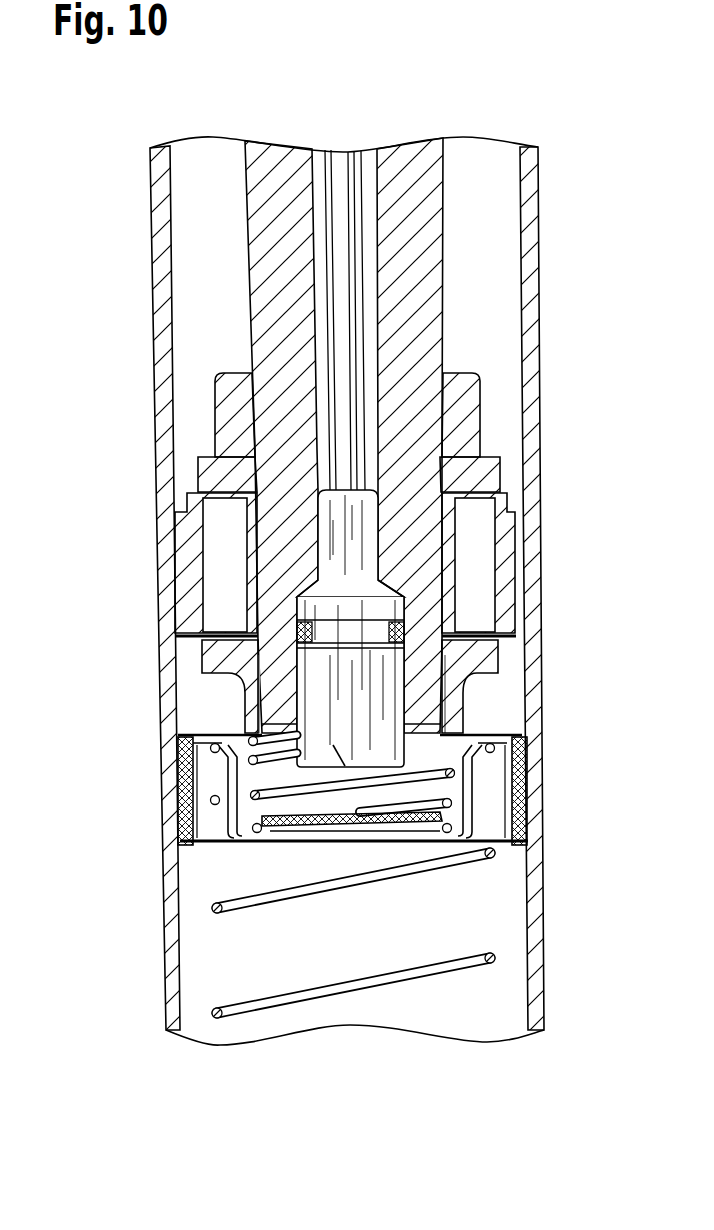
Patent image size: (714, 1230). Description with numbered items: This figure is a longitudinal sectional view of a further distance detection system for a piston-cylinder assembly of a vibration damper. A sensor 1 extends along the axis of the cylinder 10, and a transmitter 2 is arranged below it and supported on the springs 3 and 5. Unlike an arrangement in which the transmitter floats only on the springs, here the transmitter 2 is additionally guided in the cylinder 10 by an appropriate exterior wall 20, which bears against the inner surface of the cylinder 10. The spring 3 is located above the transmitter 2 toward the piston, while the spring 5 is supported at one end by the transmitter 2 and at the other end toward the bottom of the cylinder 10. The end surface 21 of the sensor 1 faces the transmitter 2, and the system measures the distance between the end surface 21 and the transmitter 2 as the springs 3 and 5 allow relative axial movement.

The cylinder 10 is at (530, 406).
The sensor 1 is at (370, 675).
The end surface 21 is at (345, 766).
The spring 3 is at (500, 765).
The transmitter 2 is at (498, 810).
The spring 5 is at (450, 967).
The exterior wall 20 is at (180, 795).